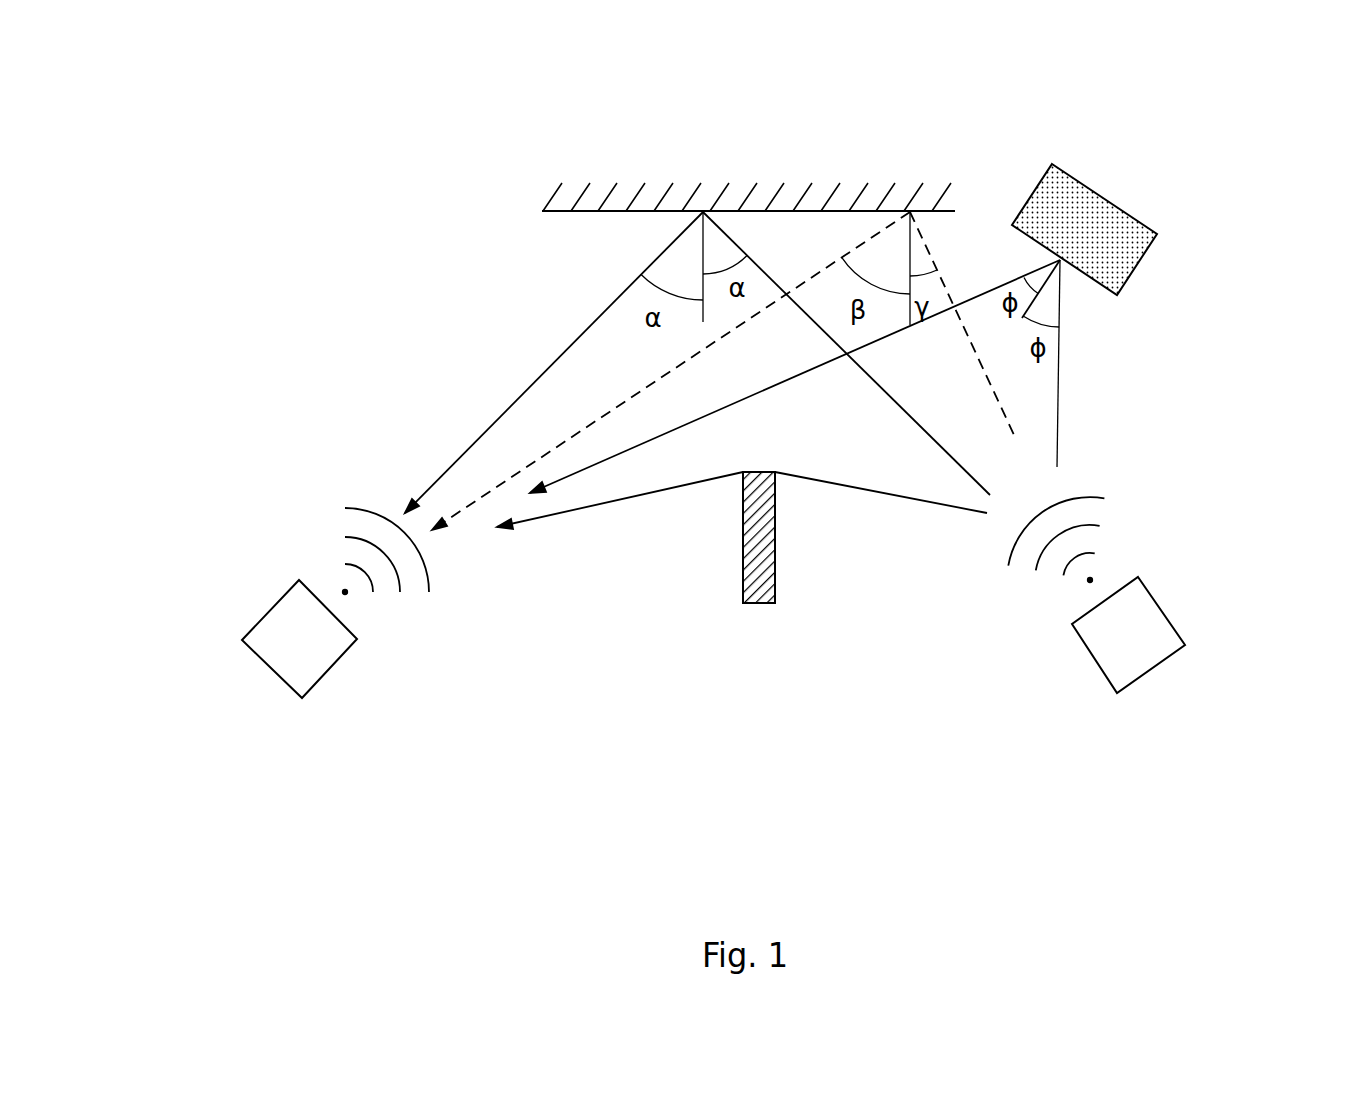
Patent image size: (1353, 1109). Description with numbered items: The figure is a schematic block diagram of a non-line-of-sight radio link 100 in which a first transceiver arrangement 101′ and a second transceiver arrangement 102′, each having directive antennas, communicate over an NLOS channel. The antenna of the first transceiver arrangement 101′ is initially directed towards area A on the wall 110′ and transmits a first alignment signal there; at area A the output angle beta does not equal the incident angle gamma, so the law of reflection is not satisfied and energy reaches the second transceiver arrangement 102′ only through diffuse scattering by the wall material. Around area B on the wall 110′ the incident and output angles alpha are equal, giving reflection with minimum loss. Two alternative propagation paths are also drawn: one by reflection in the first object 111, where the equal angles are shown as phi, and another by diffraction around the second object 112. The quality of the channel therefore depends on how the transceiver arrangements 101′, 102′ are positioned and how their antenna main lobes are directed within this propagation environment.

The radio link 100 is at (172, 157).
The wall 110′ is at (550, 227).
The first object 111 is at (1150, 213).
The second object 112 is at (785, 550).
The second transceiver arrangement 102′ is at (403, 673).
The first transceiver arrangement 101′ is at (1022, 608).